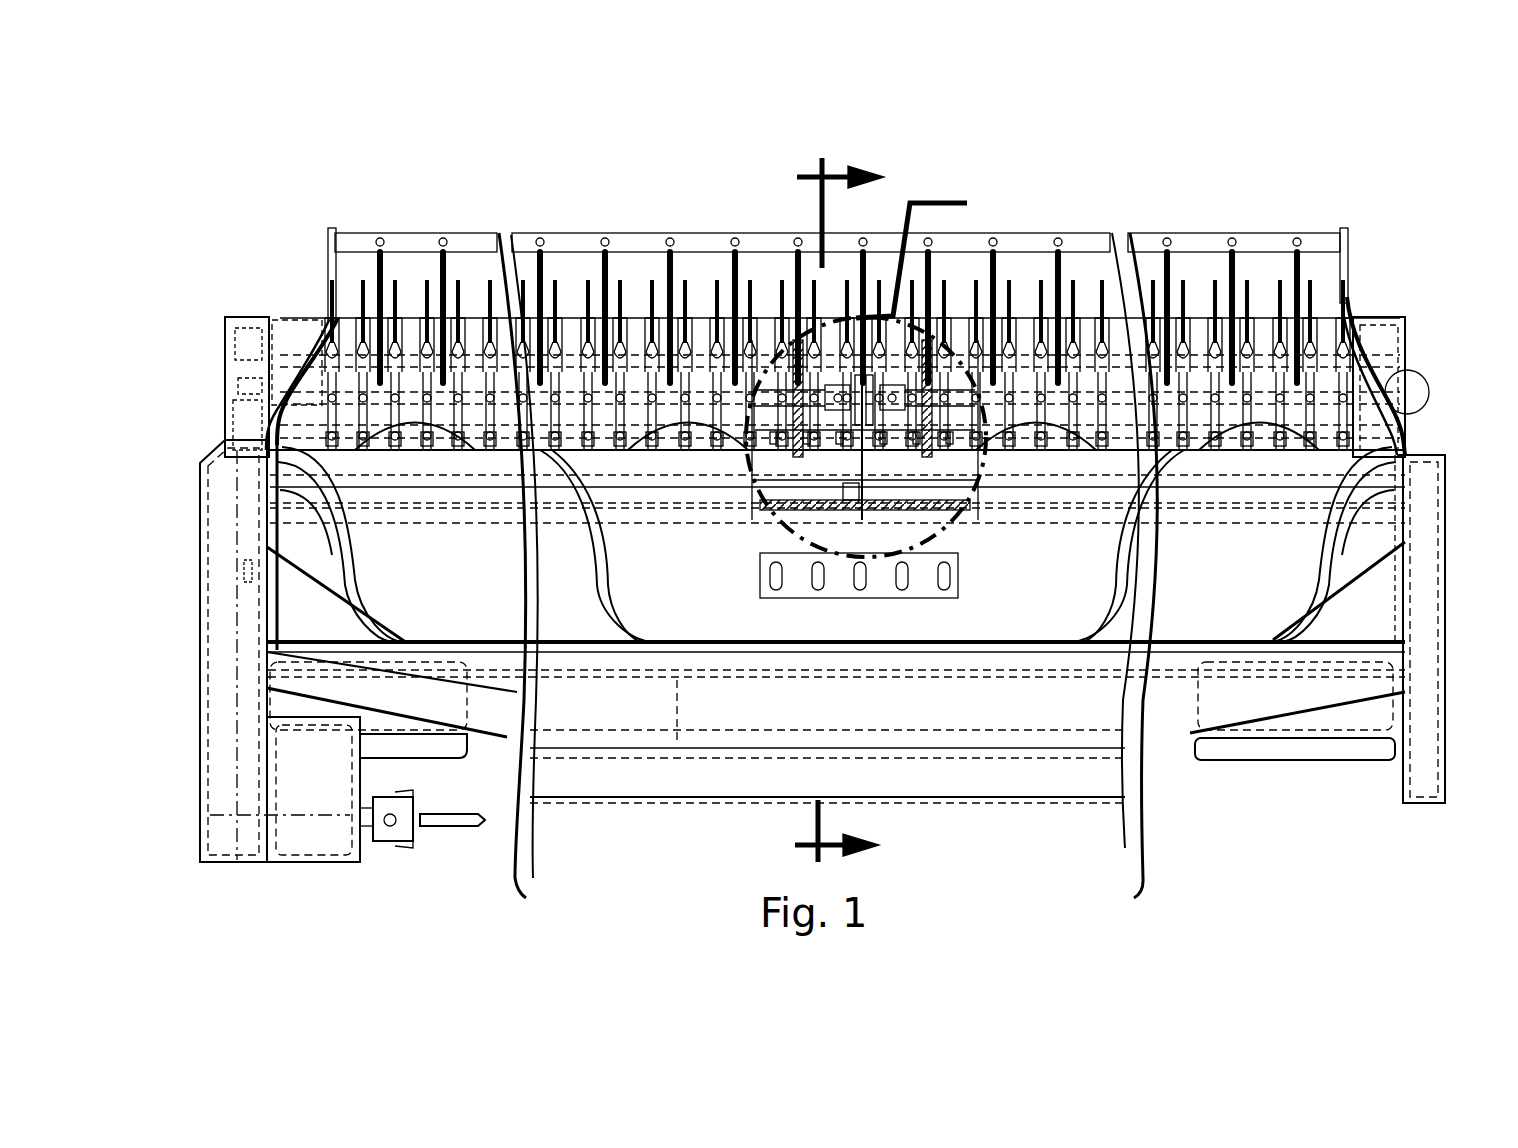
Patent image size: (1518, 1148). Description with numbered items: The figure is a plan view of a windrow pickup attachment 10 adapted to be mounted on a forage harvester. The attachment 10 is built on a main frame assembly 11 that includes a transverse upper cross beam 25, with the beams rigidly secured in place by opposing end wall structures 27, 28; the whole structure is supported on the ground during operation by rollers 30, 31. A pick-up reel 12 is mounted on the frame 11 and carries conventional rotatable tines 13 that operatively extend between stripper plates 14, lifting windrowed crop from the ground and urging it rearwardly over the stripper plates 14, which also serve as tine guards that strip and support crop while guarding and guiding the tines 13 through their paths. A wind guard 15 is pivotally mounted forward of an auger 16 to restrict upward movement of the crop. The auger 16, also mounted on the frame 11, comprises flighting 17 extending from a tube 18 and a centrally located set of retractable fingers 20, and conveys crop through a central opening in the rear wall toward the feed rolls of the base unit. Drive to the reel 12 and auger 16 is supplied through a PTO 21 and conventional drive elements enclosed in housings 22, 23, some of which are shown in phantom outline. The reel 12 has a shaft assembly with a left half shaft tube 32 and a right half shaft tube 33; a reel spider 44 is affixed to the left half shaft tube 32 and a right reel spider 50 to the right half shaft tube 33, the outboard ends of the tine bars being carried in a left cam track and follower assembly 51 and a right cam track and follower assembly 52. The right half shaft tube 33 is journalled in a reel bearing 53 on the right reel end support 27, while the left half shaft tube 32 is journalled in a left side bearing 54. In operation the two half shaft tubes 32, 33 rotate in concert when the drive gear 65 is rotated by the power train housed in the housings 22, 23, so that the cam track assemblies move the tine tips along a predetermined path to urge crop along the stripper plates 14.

The attachment 10 is at (1256, 205).
The frame 11 is at (1073, 803).
The pick-up reel 12 is at (570, 285).
The tines 13 is at (462, 292).
The stripper plates 14 is at (352, 325).
The wind guard 15 is at (633, 230).
The auger 16 is at (1355, 548).
The flighting 17 is at (347, 560).
The tube 18 is at (1228, 598).
The retractable fingers 20 is at (873, 608).
The PTO 21 is at (467, 830).
The housing 22 is at (208, 522).
The housing 23 is at (330, 862).
The transverse upper cross beam 25 is at (605, 785).
The end wall structure 27 is at (1405, 455).
The end wall structure 28 is at (272, 457).
The roller 30 is at (1303, 745).
The roller 31 is at (425, 752).
The left half shaft tube 32 is at (813, 410).
The right half shaft tube 33 is at (907, 410).
The reel spider 44 is at (800, 455).
The right reel spider 50 is at (928, 455).
The left cam track and follower assembly 51 is at (290, 310).
The right cam track and follower assembly 52 is at (1373, 312).
The reel bearing 53 is at (1415, 378).
The left side bearing 54 is at (250, 330).
The drive gear 65 is at (250, 395).